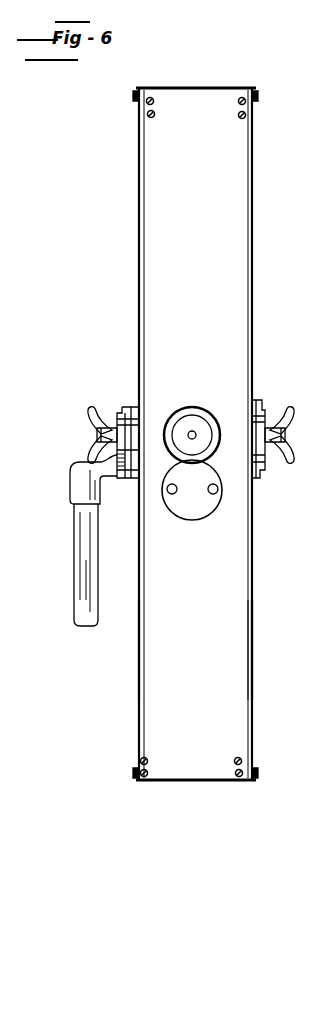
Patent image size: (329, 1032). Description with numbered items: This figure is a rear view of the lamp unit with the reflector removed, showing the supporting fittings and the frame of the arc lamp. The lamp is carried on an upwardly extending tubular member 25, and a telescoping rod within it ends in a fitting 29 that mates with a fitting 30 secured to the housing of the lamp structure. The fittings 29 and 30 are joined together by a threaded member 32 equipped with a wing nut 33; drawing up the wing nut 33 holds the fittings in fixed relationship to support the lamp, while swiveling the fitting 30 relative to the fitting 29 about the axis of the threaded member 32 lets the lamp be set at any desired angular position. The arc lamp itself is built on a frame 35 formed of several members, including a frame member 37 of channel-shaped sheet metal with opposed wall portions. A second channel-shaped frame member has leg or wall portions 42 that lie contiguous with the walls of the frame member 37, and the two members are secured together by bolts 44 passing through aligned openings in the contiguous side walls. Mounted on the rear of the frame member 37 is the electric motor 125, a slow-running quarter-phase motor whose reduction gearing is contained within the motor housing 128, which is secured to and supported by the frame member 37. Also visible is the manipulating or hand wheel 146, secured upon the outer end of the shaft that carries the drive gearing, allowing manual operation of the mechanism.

The tubular member 25 is at (82, 545).
The fitting 29 is at (80, 489).
The fitting 30 is at (133, 402).
The threaded member 32 is at (96, 433).
The wing nut 33 is at (90, 414).
The frame 35 is at (253, 566).
The frame member 37 is at (238, 652).
The leg or wall portions 42 is at (136, 672).
The bolts 44 is at (135, 96).
The electric motor 125 is at (233, 495).
The motor housing 128 is at (214, 505).
The hand wheel 146 is at (210, 412).